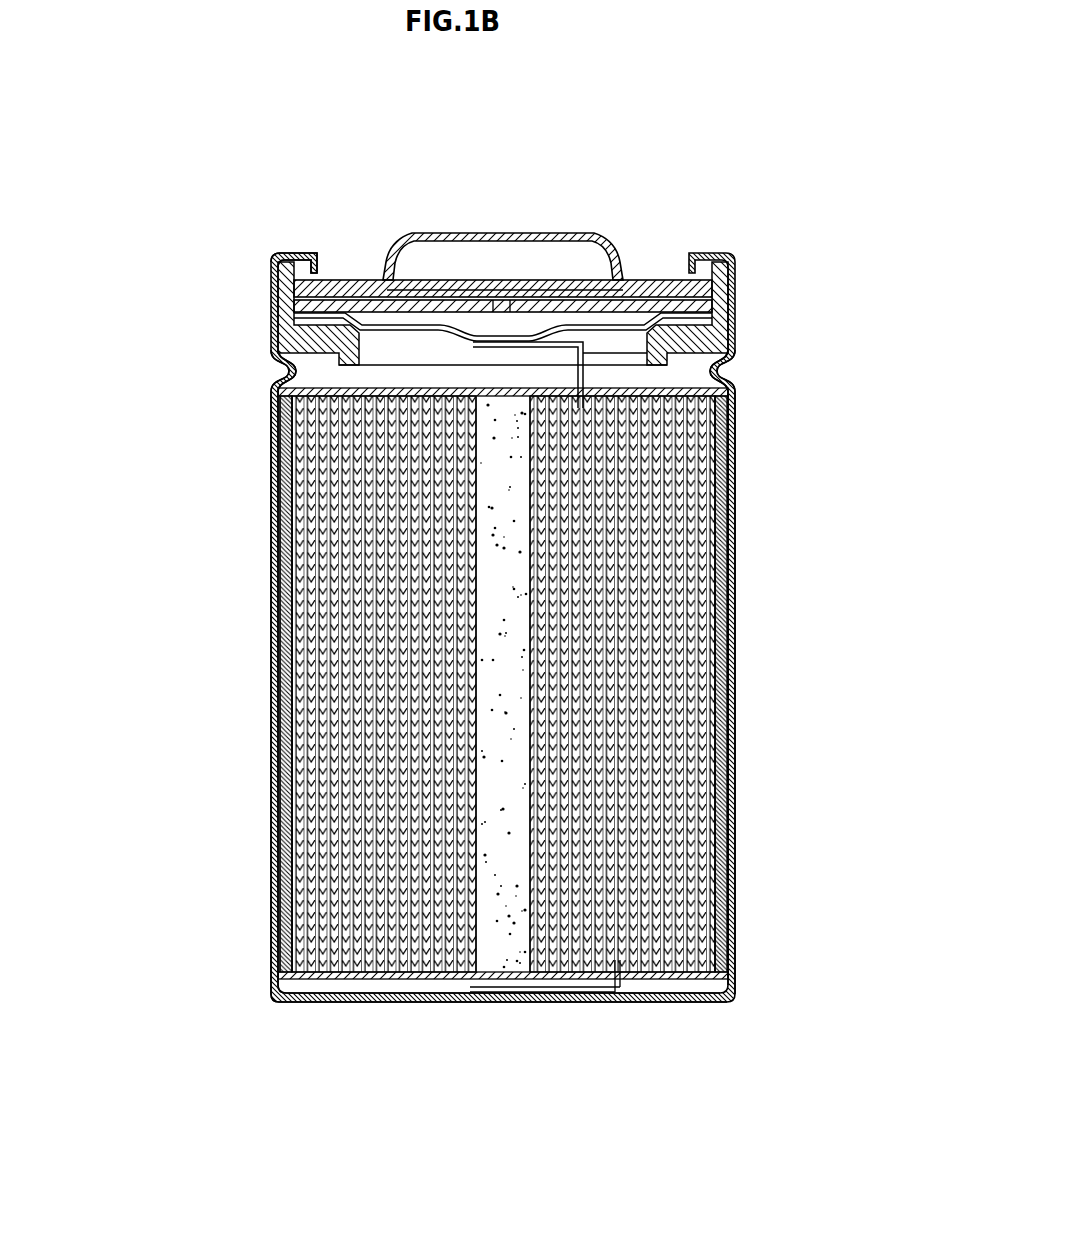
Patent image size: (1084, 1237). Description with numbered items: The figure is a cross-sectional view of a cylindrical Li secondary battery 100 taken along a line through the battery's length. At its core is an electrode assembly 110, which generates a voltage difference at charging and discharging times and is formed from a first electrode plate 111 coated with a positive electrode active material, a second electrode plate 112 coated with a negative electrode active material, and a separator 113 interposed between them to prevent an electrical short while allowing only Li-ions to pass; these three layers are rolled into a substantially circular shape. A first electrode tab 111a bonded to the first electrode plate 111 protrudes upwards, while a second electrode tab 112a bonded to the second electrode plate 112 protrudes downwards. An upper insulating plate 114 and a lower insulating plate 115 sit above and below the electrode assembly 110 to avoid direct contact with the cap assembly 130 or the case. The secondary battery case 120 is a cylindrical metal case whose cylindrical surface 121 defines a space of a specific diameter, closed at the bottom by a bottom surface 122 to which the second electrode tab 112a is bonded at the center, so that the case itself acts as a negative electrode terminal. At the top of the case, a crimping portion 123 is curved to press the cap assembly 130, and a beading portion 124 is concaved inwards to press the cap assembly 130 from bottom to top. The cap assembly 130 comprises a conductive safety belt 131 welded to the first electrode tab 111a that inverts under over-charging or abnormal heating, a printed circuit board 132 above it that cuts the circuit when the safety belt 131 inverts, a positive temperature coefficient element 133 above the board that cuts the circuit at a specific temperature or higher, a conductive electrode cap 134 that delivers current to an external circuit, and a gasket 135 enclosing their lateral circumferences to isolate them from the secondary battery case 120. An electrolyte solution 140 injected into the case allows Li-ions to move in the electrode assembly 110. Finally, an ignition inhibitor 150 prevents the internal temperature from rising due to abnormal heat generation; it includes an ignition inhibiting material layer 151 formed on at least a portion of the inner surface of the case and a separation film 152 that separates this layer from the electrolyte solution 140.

The cylindrical Li secondary battery 100 is at (756, 211).
The electrode assembly 110 is at (885, 372).
The first electrode plate 111 is at (738, 531).
The first electrode tab 111a is at (690, 362).
The second electrode plate 112 is at (738, 447).
The second electrode tab 112a is at (623, 1000).
The separator 113 is at (713, 497).
The upper insulating plate 114 is at (697, 382).
The lower insulating plate 115 is at (713, 981).
The secondary battery case 120 is at (135, 338).
The cylindrical surface 121 is at (275, 437).
The bottom surface 122 is at (312, 1002).
The crimping portion 123 is at (275, 257).
The beading portion 124 is at (292, 366).
The cap assembly 130 is at (658, 140).
The safety belt 131 is at (470, 338).
The printed circuit board 132 is at (538, 307).
The positive temperature coefficient element 133 is at (628, 275).
The electrode cap 134 is at (413, 237).
The gasket 135 is at (693, 254).
The electrolyte solution 140 is at (508, 960).
The ignition inhibitor 150 is at (395, 1076).
The ignition inhibiting material layer 151 is at (310, 965).
The separation film 152 is at (340, 958).